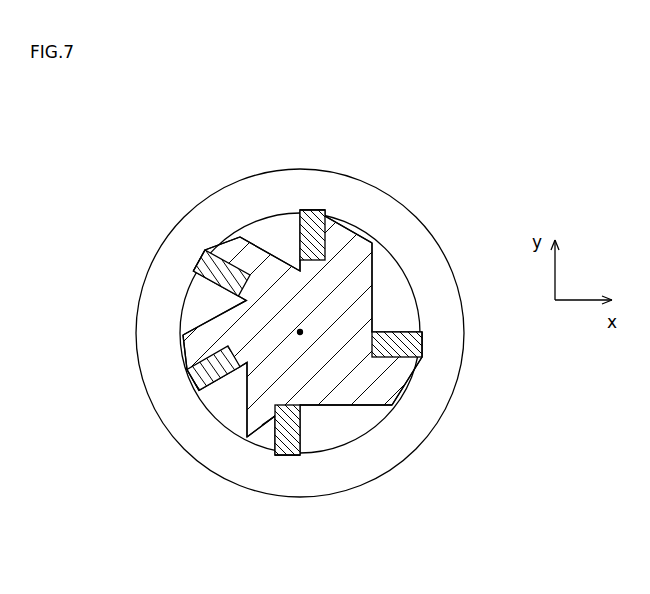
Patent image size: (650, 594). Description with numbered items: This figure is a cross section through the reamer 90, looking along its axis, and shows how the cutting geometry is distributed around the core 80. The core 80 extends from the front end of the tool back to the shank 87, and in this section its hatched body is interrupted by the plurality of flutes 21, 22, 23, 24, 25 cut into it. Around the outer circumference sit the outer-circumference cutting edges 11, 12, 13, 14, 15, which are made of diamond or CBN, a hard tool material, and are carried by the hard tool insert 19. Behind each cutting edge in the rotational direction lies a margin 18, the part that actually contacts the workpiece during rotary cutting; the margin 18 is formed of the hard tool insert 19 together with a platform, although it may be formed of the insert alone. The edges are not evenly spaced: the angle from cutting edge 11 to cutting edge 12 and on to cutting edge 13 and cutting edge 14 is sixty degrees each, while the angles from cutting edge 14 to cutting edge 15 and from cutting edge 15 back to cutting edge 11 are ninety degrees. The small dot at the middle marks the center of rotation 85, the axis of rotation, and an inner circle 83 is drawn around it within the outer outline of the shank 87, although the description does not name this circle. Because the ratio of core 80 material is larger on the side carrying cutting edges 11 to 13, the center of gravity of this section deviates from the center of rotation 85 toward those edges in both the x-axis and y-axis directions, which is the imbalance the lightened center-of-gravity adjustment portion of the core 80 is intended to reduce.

The outer-circumference cutting edge 11 is at (300, 212).
The outer-circumference cutting edge 12 is at (194, 271).
The outer-circumference cutting edge 13 is at (199, 390).
The outer-circumference cutting edge 14 is at (302, 457).
The outer-circumference cutting edge 15 is at (423, 333).
The margin 18 is at (312, 212).
The hard tool insert 19 is at (323, 212).
The flute 21 is at (299, 268).
The flute 22 is at (243, 301).
The flute 23 is at (247, 410).
The flute 24 is at (312, 410).
The flute 25 is at (373, 331).
The core 80 is at (340, 372).
The inner circumferential surface 83 is at (306, 212).
The center of rotation 85 is at (262, 428).
The shank 87 is at (386, 192).
The reamer 90 is at (465, 149).